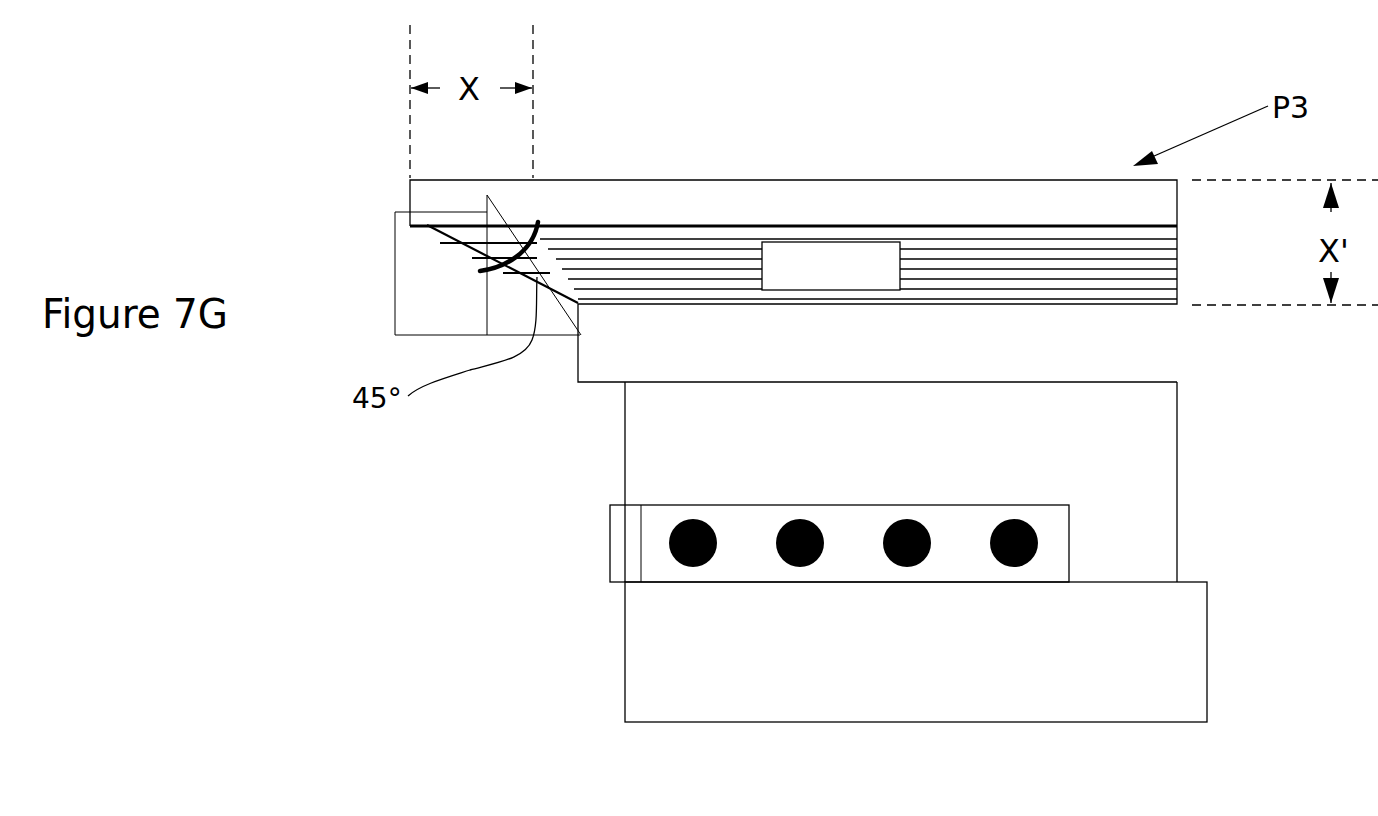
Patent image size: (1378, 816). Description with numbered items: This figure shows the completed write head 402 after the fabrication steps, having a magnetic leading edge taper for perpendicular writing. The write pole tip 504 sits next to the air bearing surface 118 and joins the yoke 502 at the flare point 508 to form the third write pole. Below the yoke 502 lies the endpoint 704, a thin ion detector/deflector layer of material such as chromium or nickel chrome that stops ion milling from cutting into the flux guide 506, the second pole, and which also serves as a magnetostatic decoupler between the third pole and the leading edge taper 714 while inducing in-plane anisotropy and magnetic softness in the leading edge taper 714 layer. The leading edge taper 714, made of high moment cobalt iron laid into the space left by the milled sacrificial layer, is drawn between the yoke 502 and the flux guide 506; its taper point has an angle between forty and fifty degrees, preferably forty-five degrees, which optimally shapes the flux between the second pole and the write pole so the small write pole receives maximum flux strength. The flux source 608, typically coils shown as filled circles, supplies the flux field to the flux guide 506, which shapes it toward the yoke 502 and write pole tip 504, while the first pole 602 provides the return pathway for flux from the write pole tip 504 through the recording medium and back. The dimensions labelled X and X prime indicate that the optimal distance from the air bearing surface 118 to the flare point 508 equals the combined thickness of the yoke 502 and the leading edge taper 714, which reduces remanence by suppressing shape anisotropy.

The air bearing surface 118 is at (315, 168).
The yoke 502 is at (992, 180).
The write pole tip 504 is at (425, 212).
The flux guide 506 is at (1207, 730).
The flare point 508 is at (533, 173).
The P1 602 is at (1177, 482).
The flux source 608 is at (662, 550).
The endpoint 704 is at (597, 362).
The LET 714 is at (1177, 282).
The write head 402 is at (422, 527).